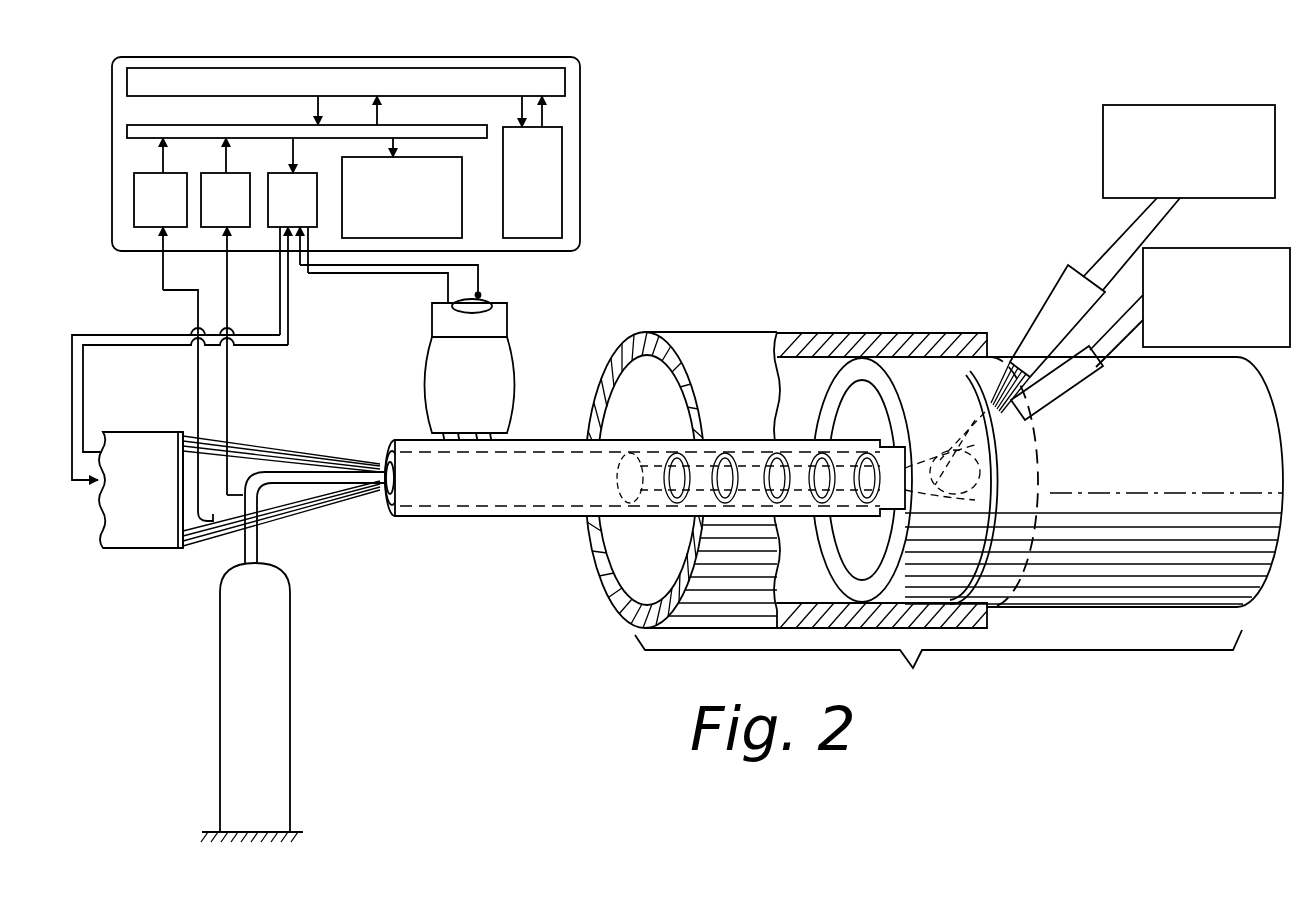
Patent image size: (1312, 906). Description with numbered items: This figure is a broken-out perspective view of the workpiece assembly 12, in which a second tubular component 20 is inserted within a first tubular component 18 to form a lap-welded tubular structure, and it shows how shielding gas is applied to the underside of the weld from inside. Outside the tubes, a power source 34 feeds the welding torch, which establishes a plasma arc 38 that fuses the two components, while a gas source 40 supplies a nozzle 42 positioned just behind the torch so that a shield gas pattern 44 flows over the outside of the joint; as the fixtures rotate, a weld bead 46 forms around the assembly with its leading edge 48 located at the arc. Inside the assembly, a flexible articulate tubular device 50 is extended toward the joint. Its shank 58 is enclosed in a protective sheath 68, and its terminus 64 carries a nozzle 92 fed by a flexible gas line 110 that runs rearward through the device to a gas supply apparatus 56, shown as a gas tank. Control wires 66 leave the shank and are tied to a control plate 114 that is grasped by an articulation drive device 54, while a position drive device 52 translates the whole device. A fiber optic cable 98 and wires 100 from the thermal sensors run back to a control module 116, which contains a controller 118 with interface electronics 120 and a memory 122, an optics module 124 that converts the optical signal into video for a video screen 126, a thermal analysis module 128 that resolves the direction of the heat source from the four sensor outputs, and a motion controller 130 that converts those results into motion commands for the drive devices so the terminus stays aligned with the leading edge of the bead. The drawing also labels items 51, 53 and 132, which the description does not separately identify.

The workpiece assembly 12 is at (913, 668).
The first tubular component 18 is at (725, 340).
The second tubular component 20 is at (1232, 577).
The power source 34 is at (1117, 122).
The plasma arc 38 is at (993, 385).
The gas source 40 is at (1250, 270).
The nozzle 42 is at (1083, 372).
The shield gas pattern 44 is at (1023, 425).
The weld bead 46 is at (1000, 454).
The leading edge 48 is at (988, 405).
The flexible articulate tubular device 50 is at (551, 523).
The motor connector 51 is at (495, 327).
The position drive device 52 is at (438, 391).
The motor housing 53 is at (505, 371).
The articulation drive device 54 is at (125, 428).
The gas supply apparatus 56 is at (230, 735).
The shank 58 is at (537, 460).
The terminus 64 is at (988, 492).
The control wires 66 is at (262, 448).
The protective sheath 68 is at (390, 440).
The nozzle 92 is at (977, 437).
The fiber optic cable 98 is at (196, 514).
The wires 100 is at (240, 500).
The flexible gas line 110 is at (296, 472).
The control plate 114 is at (178, 432).
The control module 116 is at (580, 110).
The controller 118 is at (142, 79).
The interface electronics 120 is at (142, 129).
The memory 122 is at (532, 167).
The optics module 124 is at (160, 214).
The video screen 126 is at (390, 167).
The thermal analysis module 128 is at (225, 316).
The motion controller 130 is at (292, 241).
The weld zone 132 is at (988, 413).